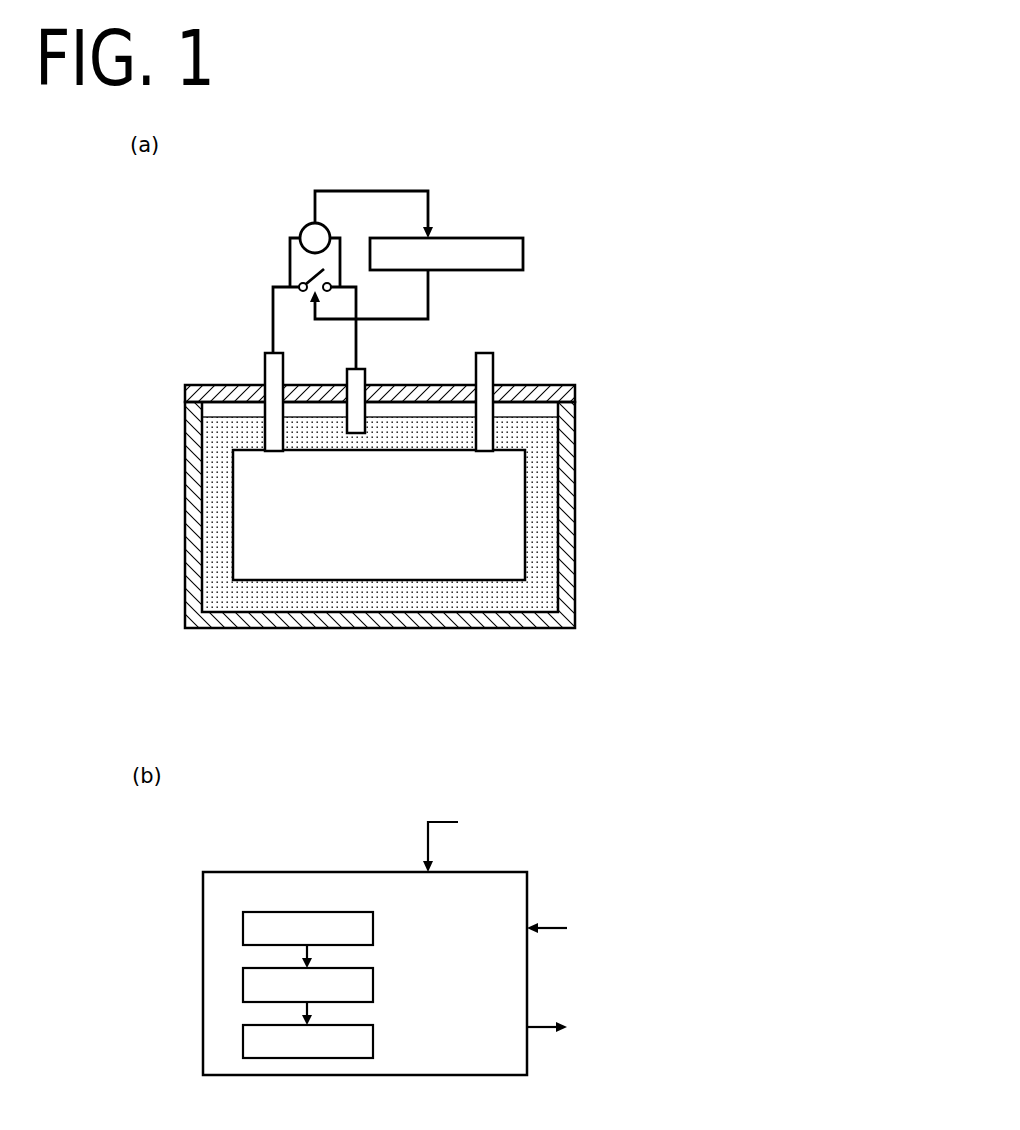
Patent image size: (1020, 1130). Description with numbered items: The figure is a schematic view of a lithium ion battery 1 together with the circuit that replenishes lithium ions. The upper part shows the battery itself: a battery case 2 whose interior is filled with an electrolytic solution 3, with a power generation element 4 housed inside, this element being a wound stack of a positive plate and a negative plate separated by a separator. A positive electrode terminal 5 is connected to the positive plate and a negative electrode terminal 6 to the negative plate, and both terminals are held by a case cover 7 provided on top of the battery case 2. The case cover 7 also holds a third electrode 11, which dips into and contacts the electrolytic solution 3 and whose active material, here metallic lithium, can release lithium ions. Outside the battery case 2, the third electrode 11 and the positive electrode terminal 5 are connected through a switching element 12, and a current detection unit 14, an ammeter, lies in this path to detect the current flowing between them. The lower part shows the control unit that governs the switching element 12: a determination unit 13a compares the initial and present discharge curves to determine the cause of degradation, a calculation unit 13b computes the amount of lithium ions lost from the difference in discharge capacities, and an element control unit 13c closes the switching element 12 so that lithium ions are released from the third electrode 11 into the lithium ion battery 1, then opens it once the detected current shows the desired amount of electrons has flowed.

The lithium ion battery 1 is at (600, 281).
The battery case 2 is at (565, 497).
The electrolytic solution 3 is at (547, 467).
The power generation element 4 is at (513, 558).
The positive electrode terminal 5 is at (283, 371).
The negative electrode terminal 6 is at (487, 350).
The case cover 7 is at (448, 385).
The third electrode 11 is at (365, 373).
The switching element 12 is at (300, 302).
The determination unit 13a is at (375, 925).
The calculation unit 13b is at (375, 978).
The element control unit 13c is at (375, 1038).
The current detection unit 14 is at (302, 230).